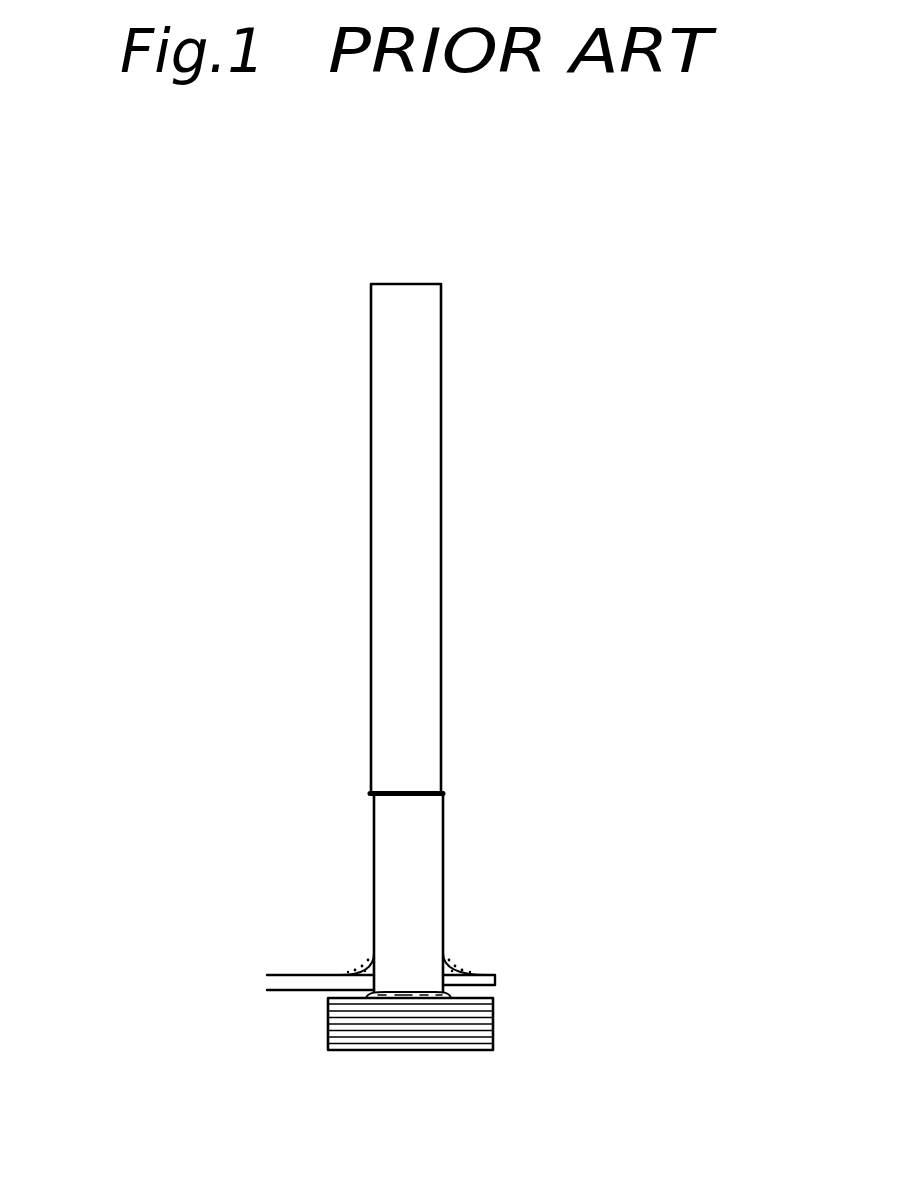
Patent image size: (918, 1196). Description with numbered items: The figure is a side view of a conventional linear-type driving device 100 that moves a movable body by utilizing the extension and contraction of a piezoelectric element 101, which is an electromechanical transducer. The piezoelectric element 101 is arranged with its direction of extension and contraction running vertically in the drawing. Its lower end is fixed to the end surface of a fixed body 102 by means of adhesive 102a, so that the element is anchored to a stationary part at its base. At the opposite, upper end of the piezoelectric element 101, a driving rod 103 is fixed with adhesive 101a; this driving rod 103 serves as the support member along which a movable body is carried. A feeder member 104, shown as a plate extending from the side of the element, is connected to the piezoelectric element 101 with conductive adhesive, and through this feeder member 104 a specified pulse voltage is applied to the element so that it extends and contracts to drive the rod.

The driving device 100 is at (495, 512).
The piezoelectric element 101 is at (418, 868).
The adhesive 101a is at (373, 795).
The fixed body 102 is at (467, 1033).
The adhesive 102a is at (335, 997).
The driving rod 103 is at (436, 589).
The feeder member 104 is at (494, 983).